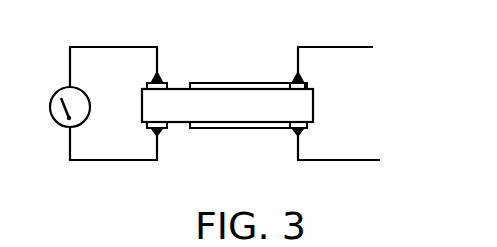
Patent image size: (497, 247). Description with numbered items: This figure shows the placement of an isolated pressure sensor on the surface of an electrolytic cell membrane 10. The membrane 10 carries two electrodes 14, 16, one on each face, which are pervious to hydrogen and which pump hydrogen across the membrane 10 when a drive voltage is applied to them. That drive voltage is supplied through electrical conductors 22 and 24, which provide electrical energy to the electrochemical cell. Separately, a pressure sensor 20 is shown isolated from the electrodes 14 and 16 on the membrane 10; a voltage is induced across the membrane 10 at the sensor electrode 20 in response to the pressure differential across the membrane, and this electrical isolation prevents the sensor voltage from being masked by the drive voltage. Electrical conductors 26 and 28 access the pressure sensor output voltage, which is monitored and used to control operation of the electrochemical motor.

The electrolytic membrane 10 is at (313, 110).
The electrode 14 is at (250, 130).
The electrode 16 is at (238, 82).
The pressure sensor 20 is at (161, 78).
The electrical conductor 22 is at (333, 47).
The electrical conductor 24 is at (343, 162).
The electrical conductor 26 is at (118, 162).
The electrical conductor 28 is at (93, 47).